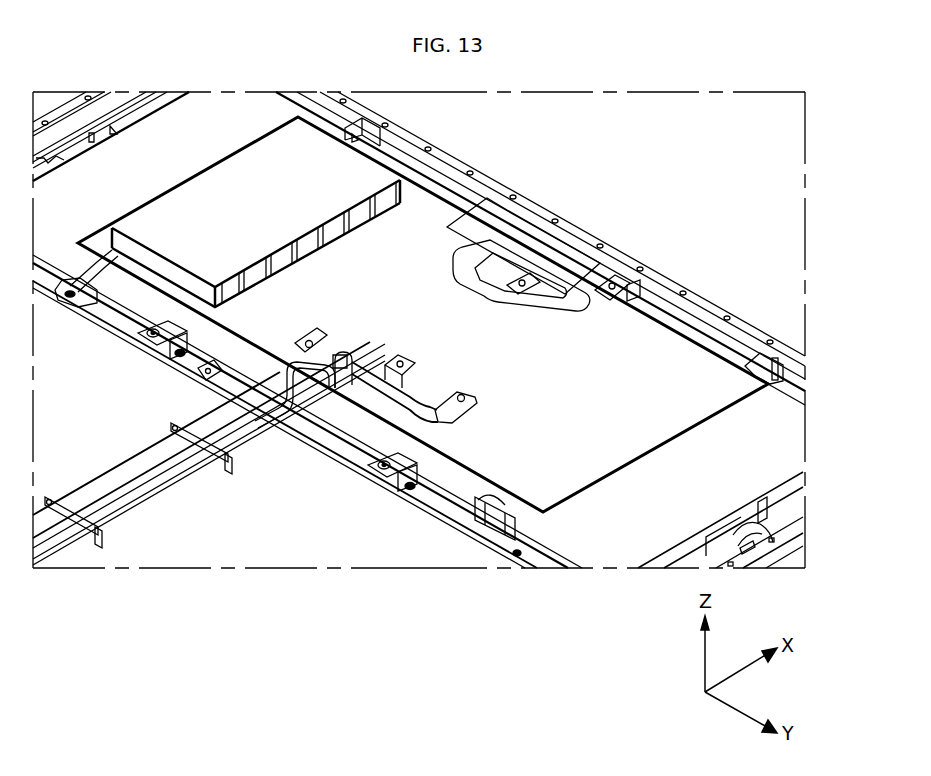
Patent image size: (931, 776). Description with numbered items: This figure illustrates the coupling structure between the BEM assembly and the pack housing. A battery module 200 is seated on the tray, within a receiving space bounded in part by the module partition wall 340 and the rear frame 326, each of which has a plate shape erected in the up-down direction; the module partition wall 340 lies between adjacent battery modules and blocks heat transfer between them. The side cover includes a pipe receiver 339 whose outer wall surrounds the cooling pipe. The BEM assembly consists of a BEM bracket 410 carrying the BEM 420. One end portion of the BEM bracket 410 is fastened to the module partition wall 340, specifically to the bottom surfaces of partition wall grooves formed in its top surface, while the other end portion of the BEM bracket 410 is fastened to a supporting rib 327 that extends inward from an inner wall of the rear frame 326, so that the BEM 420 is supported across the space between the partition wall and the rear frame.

The battery module 200 is at (768, 438).
The rear frame 326 is at (662, 282).
The supporting rib 327 is at (705, 330).
The pipe receiver 339 is at (423, 391).
The module partition wall 340 is at (430, 503).
The BEM bracket 410 is at (510, 500).
The BEM 420 is at (567, 473).